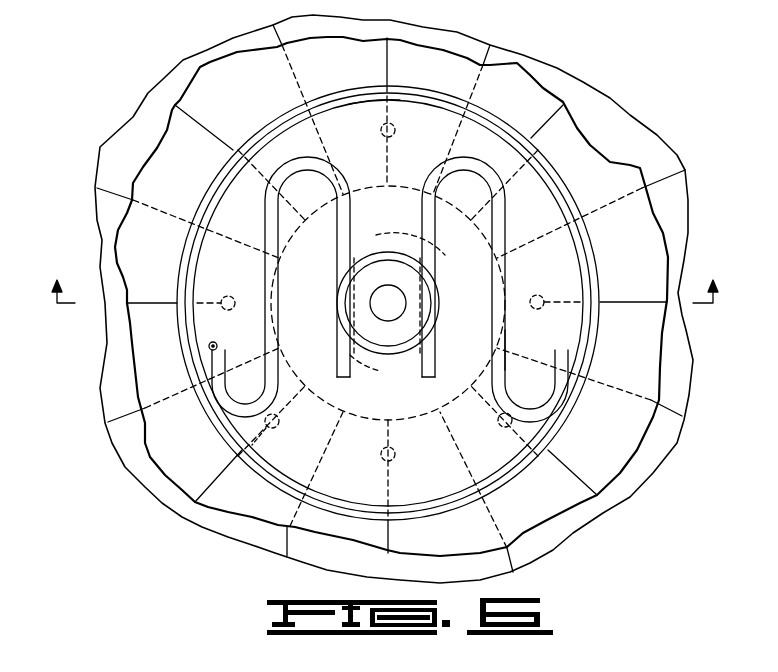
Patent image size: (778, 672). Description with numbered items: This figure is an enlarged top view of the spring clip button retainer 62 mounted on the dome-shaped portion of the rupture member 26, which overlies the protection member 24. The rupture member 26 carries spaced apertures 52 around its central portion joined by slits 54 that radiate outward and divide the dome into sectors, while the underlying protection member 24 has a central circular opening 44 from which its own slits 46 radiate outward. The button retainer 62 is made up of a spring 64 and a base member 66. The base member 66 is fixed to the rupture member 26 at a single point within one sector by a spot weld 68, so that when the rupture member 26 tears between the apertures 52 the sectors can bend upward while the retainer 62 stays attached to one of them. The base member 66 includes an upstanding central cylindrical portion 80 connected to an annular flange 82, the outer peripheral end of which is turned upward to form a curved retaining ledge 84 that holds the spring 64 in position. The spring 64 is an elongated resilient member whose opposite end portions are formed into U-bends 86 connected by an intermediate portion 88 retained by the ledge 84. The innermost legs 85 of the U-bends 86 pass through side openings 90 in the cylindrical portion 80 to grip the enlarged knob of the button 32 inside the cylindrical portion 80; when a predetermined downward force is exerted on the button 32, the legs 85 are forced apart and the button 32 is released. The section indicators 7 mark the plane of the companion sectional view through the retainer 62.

The protection member 24 is at (630, 136).
The rupture member 26 is at (572, 144).
The slits 54 is at (392, 61).
The slits 46 is at (280, 84).
The spaced apertures 52 is at (397, 130).
The curved retaining ledge 84 is at (210, 182).
The button retainer 62 is at (600, 244).
The base member 66 is at (597, 281).
The intermediate portion 88 is at (370, 104).
The central circular opening 44 is at (490, 248).
The annular flange 82 is at (316, 307).
The legs 85 is at (423, 257).
The U-bends 86 is at (341, 169).
The spring 64 is at (508, 353).
The spot weld 68 is at (209, 346).
The button 32 is at (378, 272).
The central cylindrical portion 80 is at (407, 368).
The side openings 90 is at (420, 240).
The section line 7- 7 is at (386, 279).